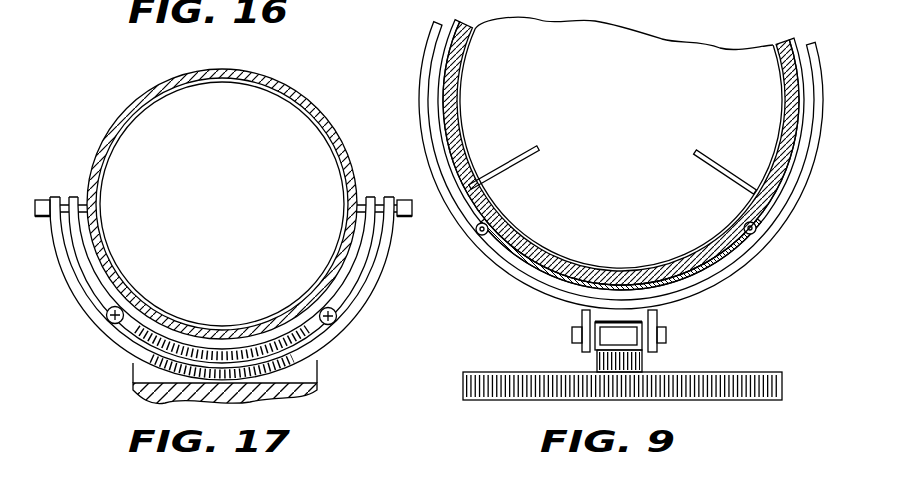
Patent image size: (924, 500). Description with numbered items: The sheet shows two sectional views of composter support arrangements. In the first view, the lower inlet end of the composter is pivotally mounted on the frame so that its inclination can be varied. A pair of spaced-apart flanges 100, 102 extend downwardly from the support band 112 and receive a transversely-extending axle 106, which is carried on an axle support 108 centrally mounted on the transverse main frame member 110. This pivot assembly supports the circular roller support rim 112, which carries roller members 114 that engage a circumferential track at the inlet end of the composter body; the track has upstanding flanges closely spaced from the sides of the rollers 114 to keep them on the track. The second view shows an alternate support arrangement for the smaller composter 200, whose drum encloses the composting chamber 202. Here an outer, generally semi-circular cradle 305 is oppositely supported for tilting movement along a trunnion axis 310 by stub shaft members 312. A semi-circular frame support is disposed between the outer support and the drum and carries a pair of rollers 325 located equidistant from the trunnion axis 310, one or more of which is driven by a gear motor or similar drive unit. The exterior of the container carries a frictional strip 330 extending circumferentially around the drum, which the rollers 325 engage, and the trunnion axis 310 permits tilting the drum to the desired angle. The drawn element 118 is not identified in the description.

In FIG. 17, the composter 200 is at (264, 72).
In FIG. 17, the composting chamber 202 is at (246, 198).
In FIG. 17, the frictional strip 330 is at (92, 160).
In FIG. 17, the cradle 305 is at (394, 242).
In FIG. 17, the trunnion axis 310 is at (36, 203).
In FIG. 17, the stub shaft members 312 is at (410, 198).
In FIG. 17, the rollers 325 is at (108, 324).
In FIG. 9, the support band 112 is at (436, 36).
In FIG. 9, the roller members 114 is at (489, 246).
In FIG. 9, the tank wall 118 is at (450, 19).
In FIG. 9, the flange 100 is at (657, 320).
In FIG. 9, the flange 102 is at (582, 314).
In FIG. 9, the axle 106 is at (662, 343).
In FIG. 9, the axle support 108 is at (596, 357).
In FIG. 9, the main frame member 110 is at (733, 372).